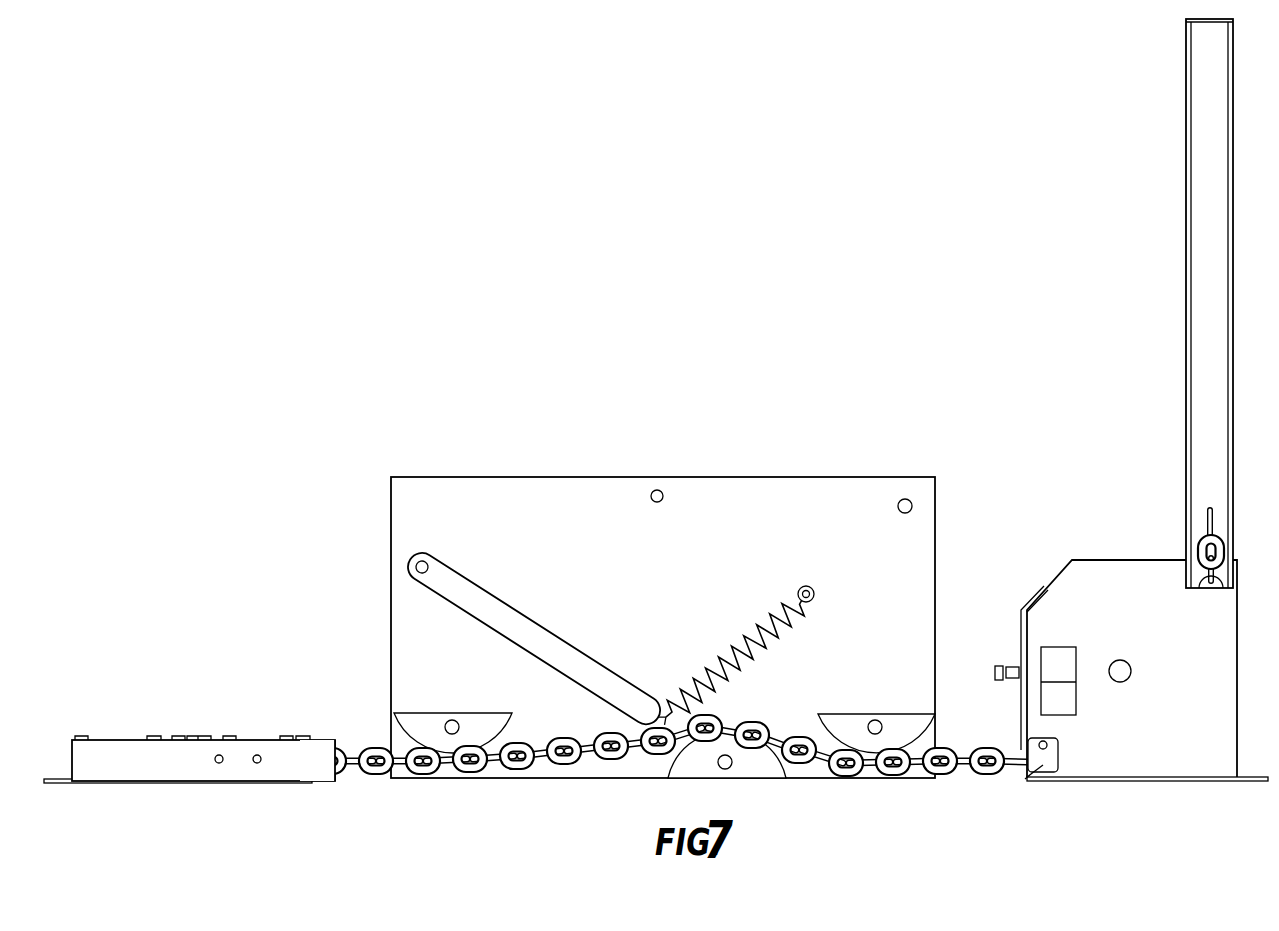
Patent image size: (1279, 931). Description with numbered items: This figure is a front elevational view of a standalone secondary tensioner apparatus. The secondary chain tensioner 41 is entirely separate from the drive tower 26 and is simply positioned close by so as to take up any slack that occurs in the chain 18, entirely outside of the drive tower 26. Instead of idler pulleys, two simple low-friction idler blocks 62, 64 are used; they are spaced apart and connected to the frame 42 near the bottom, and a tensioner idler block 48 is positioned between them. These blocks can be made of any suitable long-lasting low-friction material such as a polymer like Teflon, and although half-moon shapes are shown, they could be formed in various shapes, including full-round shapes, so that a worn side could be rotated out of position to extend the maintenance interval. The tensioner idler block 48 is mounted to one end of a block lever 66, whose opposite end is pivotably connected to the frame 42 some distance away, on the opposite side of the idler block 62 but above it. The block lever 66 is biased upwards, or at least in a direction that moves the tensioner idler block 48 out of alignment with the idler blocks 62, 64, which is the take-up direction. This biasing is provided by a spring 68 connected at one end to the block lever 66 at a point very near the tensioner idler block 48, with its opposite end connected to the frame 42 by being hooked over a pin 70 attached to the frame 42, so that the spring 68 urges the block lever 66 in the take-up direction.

The chain 18 is at (958, 782).
The drive tower 26 is at (1196, 423).
The secondary chain tensioner 41 is at (402, 541).
The frame 42 is at (629, 589).
The tensioner idler block 48 is at (740, 768).
The idler block 62 is at (417, 718).
The idler block 64 is at (880, 718).
The block lever 66 is at (489, 606).
The spring 68 is at (762, 612).
The pin 70 is at (813, 596).